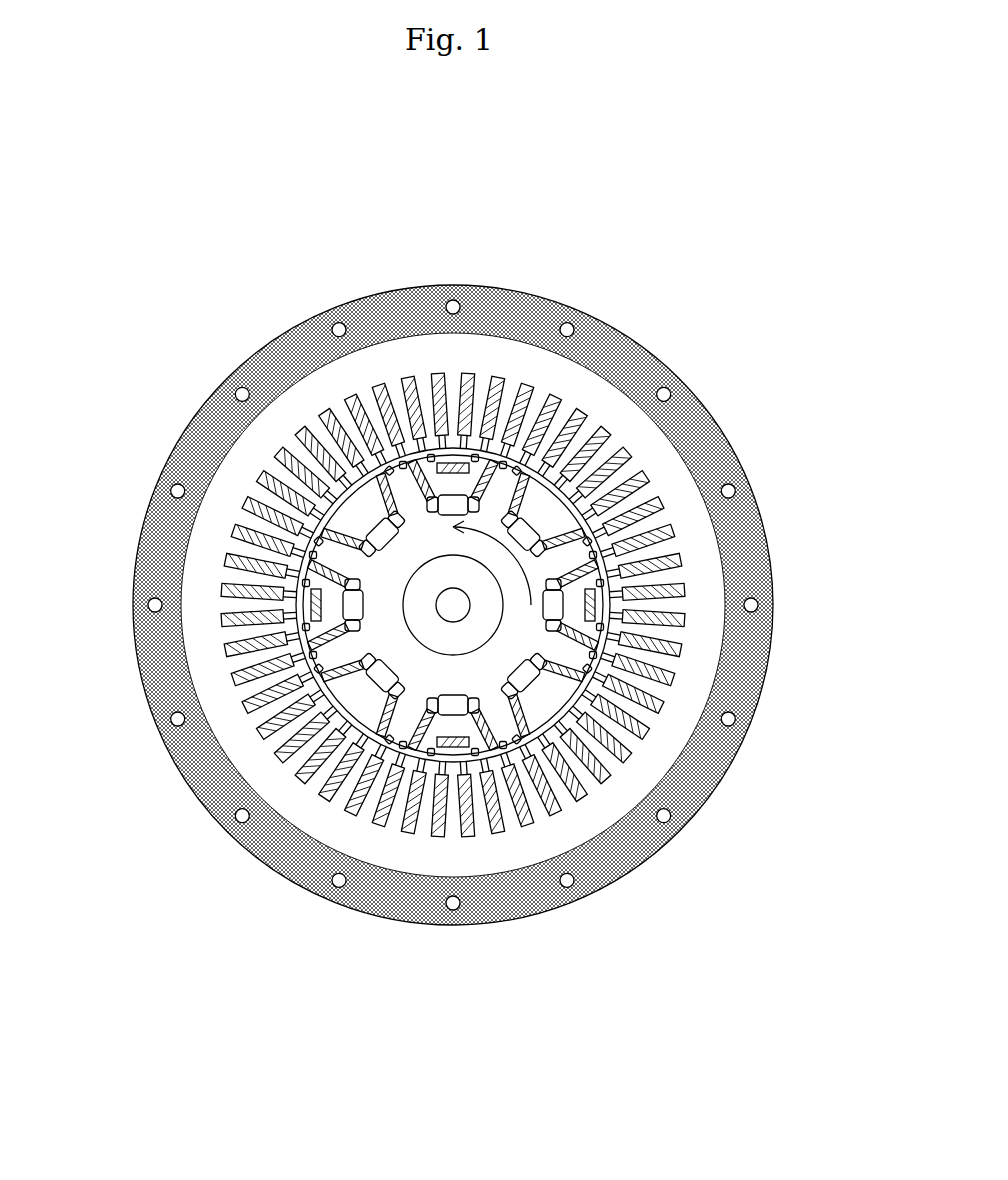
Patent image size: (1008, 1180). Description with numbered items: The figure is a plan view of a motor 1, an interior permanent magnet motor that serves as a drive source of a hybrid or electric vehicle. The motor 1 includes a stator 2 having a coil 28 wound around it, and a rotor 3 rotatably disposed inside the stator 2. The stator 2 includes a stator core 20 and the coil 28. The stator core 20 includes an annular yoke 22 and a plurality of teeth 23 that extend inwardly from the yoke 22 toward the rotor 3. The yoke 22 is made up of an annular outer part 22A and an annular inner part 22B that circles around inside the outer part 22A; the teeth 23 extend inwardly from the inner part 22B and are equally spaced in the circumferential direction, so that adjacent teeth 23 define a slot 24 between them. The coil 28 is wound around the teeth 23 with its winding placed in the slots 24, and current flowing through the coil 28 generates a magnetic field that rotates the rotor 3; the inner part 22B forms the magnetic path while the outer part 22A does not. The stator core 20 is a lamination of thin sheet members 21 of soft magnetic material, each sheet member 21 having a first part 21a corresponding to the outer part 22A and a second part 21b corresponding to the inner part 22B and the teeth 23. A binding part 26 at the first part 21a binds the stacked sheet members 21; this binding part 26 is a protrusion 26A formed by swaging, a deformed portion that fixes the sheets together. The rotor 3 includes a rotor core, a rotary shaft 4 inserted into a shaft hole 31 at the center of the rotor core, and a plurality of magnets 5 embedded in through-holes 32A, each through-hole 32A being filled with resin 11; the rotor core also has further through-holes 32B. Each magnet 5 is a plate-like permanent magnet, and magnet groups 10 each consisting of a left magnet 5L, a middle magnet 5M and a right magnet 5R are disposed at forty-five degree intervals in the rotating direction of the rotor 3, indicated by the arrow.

The motor 1 is at (187, 213).
The stator 2 is at (229, 352).
The rotor 3 is at (487, 640).
The rotary shaft 4 is at (496, 689).
The magnet 5 is at (655, 625).
The left magnet 5L is at (428, 497).
The middle magnet 5M is at (461, 467).
The right magnet 5R is at (493, 485).
The magnet group 10 is at (565, 244).
The resin 11 is at (418, 494).
The stator core 20 is at (203, 421).
The sheet member 21 is at (840, 630).
The first part 21a is at (753, 672).
The second part 21b is at (708, 643).
The yoke 22 is at (96, 822).
The outer part 22A is at (257, 830).
The inner part 22B is at (260, 782).
The teeth 23 is at (260, 660).
The slot 24 is at (247, 712).
The binding part 26 is at (155, 605).
The protrusion 26A is at (717, 783).
The coil 28 is at (280, 453).
The shaft hole 31 is at (450, 652).
The through-hole 32A is at (484, 503).
The through-hole 32B is at (466, 508).